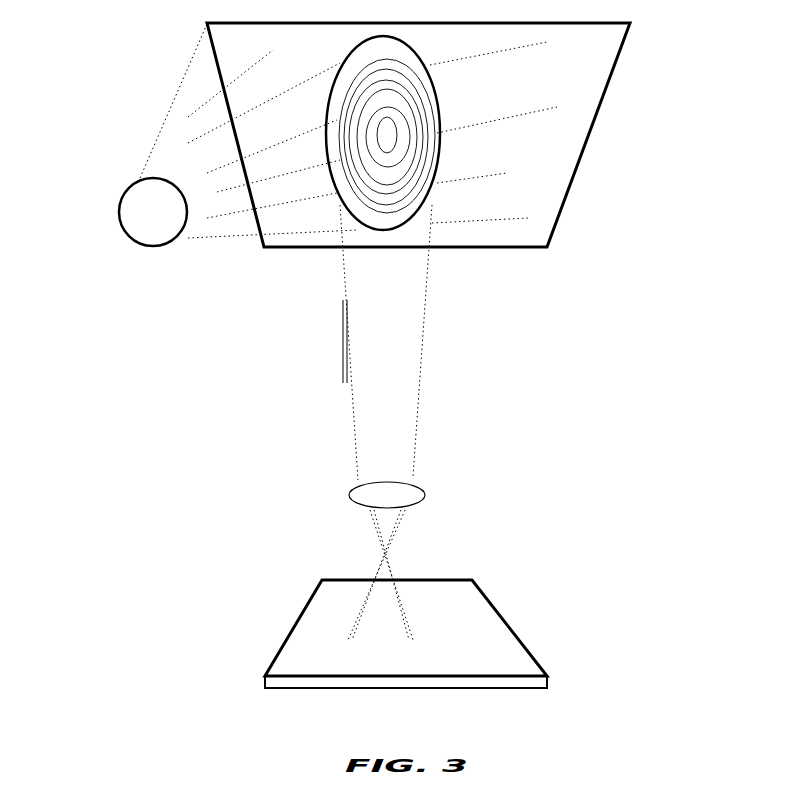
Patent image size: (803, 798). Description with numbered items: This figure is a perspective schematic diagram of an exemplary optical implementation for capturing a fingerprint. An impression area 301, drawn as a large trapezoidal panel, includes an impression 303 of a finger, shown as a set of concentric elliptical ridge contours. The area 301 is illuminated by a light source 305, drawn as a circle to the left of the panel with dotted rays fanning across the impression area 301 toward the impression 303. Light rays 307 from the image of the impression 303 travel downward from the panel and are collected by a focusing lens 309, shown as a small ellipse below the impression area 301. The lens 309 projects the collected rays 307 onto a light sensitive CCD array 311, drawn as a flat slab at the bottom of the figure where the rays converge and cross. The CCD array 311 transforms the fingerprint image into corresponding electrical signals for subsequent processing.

The impression area 301 is at (603, 98).
The impression 303 is at (433, 66).
The light source 305 is at (120, 187).
The light rays 307 is at (423, 345).
The focusing lens 309 is at (432, 495).
The light sensitive CCD array 311 is at (295, 621).